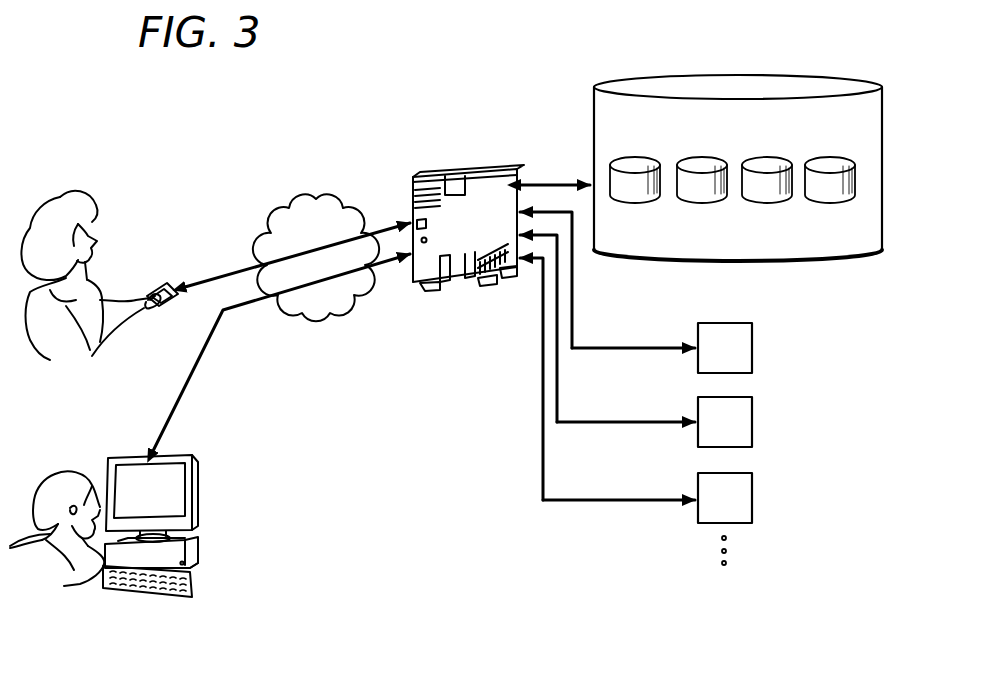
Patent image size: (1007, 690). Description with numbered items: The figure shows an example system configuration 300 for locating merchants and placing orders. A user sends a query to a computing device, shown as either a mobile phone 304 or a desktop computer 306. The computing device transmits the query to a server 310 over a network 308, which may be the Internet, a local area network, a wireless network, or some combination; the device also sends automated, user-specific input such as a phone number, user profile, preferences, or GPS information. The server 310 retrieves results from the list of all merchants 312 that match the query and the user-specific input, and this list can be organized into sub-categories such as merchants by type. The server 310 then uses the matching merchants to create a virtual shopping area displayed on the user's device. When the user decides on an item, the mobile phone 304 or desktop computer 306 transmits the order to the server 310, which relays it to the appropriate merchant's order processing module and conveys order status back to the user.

The system configuration 300 is at (386, 130).
The mobile phone 304 is at (168, 281).
The desktop computer 306 is at (199, 499).
The network 308 is at (318, 201).
The server 310 is at (466, 173).
The list of all merchants 312 is at (737, 90).